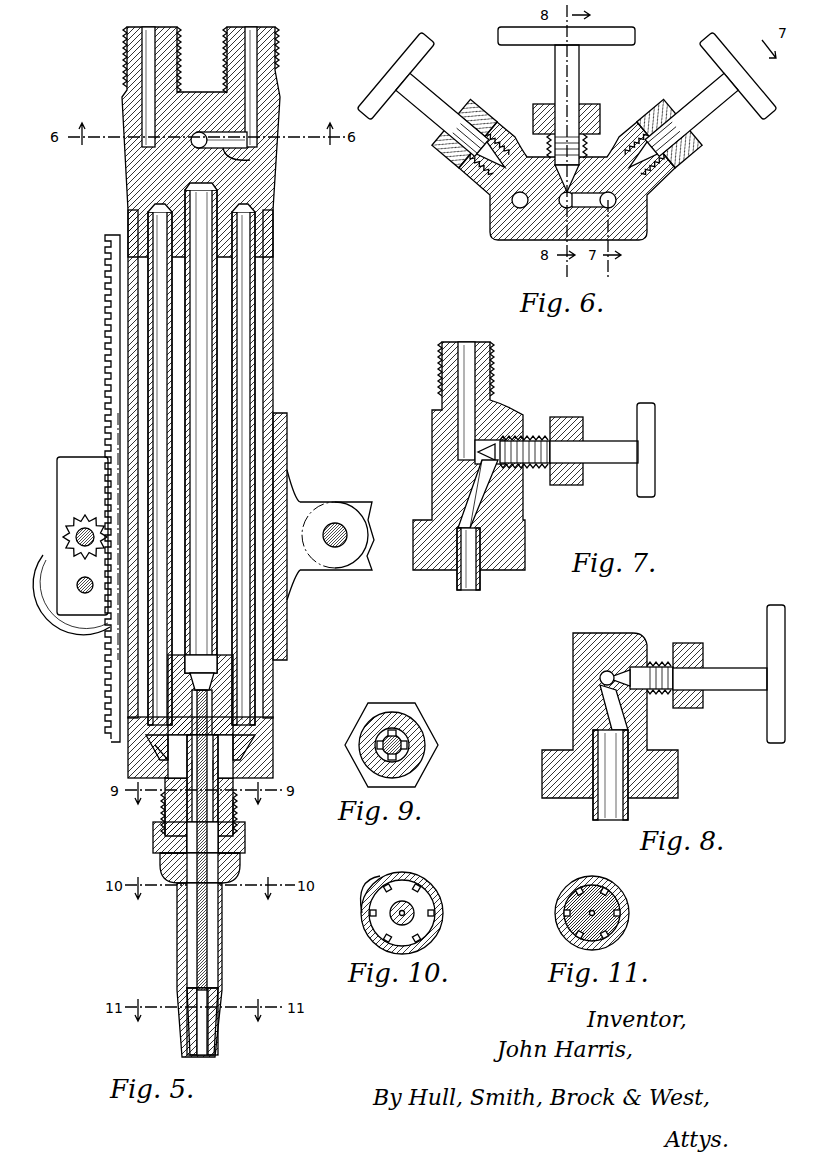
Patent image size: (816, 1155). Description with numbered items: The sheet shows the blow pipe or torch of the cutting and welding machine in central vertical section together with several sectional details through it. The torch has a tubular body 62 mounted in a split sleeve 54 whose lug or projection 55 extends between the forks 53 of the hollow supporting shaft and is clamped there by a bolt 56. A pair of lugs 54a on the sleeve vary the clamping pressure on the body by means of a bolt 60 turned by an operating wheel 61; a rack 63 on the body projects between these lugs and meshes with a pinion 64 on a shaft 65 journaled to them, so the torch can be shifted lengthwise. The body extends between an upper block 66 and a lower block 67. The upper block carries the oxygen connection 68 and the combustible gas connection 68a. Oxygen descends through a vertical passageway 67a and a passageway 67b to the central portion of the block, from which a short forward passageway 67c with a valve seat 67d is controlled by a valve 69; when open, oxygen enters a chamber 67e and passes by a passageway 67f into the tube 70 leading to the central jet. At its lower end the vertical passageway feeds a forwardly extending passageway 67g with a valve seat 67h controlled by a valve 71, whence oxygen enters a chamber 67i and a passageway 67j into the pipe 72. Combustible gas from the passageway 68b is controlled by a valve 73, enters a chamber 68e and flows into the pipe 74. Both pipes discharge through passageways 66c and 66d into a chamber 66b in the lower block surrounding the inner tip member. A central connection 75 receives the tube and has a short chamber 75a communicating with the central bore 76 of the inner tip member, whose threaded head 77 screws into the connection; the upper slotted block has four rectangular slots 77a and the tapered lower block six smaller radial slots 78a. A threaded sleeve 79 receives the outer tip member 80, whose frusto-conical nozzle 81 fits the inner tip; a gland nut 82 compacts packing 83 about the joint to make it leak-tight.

In FIG. 5, the forks 53 is at (366, 504).
In FIG. 5, the sleeve 54 is at (288, 447).
In FIG. 5, the lugs 54a is at (68, 470).
In FIG. 5, the lug or projection 55 is at (316, 503).
In FIG. 5, the bolt 56 is at (335, 547).
In FIG. 5, the bolt 60 is at (77, 585).
In FIG. 5, the operating wheel 61 is at (52, 600).
In FIG. 5, the tubular body 62 is at (130, 383).
In FIG. 5, the rack 63 is at (120, 345).
In FIG. 5, the pinion 64 is at (70, 522).
In FIG. 5, the shaft 65 is at (76, 537).
In FIG. 5, the block 66 is at (190, 104).
In FIG. 6, the block 66 is at (530, 236).
In FIG. 7, the block 66 is at (434, 460).
In FIG. 8, the block 66 is at (598, 636).
In FIG. 5, the chamber 66b is at (160, 760).
In FIG. 5, the passageway 66c is at (246, 738).
In FIG. 5, the passageway 66d is at (150, 742).
In FIG. 5, the lower block 67 is at (256, 760).
In FIG. 5, the vertical passageway 67a is at (257, 96).
In FIG. 6, the vertical passageway 67a is at (615, 210).
In FIG. 7, the vertical passageway 67a is at (470, 388).
In FIG. 5, the passageway 67b is at (276, 162).
In FIG. 6, the passageway 67b is at (588, 207).
In FIG. 8, the passageway 67b is at (602, 682).
In FIG. 6, the passageway 67c is at (512, 212).
In FIG. 6, the valve seat 67d is at (527, 158).
In FIG. 8, the valve seat 67d is at (625, 672).
In FIG. 6, the chamber 67e is at (590, 170).
In FIG. 8, the chamber 67e is at (640, 650).
In FIG. 8, the passageway 67f is at (620, 710).
In FIG. 6, the forwardly extending passageway 67g is at (640, 204).
In FIG. 6, the valve seat 67h is at (652, 196).
In FIG. 7, the valve seat 67h is at (492, 480).
In FIG. 6, the chamber 67i is at (650, 188).
In FIG. 7, the chamber 67i is at (490, 442).
In FIG. 5, the passageway 67j is at (268, 200).
In FIG. 7, the passageway 67j is at (470, 510).
In FIG. 5, the connection 68 is at (278, 47).
In FIG. 7, the connection 68 is at (492, 364).
In FIG. 5, the connection 68a is at (180, 48).
In FIG. 5, the passageway 68b is at (146, 74).
In FIG. 6, the passageway 68b is at (508, 228).
In FIG. 6, the chamber 68e is at (478, 186).
In FIG. 6, the valve 69 is at (594, 158).
In FIG. 8, the valve 69 is at (647, 660).
In FIG. 5, the tube 70 is at (216, 308).
In FIG. 8, the tube 70 is at (606, 806).
In FIG. 6, the valve 71 is at (690, 168).
In FIG. 7, the valve 71 is at (540, 418).
In FIG. 5, the pipe 72 is at (247, 358).
In FIG. 7, the pipe 72 is at (471, 583).
In FIG. 6, the valve 73 is at (462, 166).
In FIG. 5, the pipe 74 is at (157, 298).
In FIG. 5, the central connection 75 is at (233, 680).
In FIG. 9, the central connection 75 is at (412, 758).
In FIG. 5, the passageway or chamber 75a is at (215, 688).
In FIG. 5, the central bore 76 is at (197, 805).
In FIG. 9, the central bore 76 is at (372, 755).
In FIG. 10, the central bore 76 is at (412, 906).
In FIG. 11, the central bore 76 is at (568, 904).
In FIG. 5, the externally threaded head 77 is at (220, 722).
In FIG. 5, the rectangular slots 77a is at (186, 826).
In FIG. 9, the rectangular slots 77a is at (405, 736).
In FIG. 5, the radially extending rectangular slots 78a is at (190, 1050).
In FIG. 10, the radially extending rectangular slots 78a is at (372, 916).
In FIG. 11, the radially extending rectangular slots 78a is at (565, 922).
In FIG. 5, the externally threaded sleeve 79 is at (160, 855).
In FIG. 5, the outer tip member 80 is at (223, 930).
In FIG. 10, the outer tip member 80 is at (420, 882).
In FIG. 11, the outer tip member 80 is at (608, 892).
In FIG. 5, the tapered nozzle end 81 is at (216, 1036).
In FIG. 5, the gland nut 82 is at (246, 840).
In FIG. 9, the gland nut 82 is at (418, 718).
In FIG. 5, the packing 83 is at (242, 866).